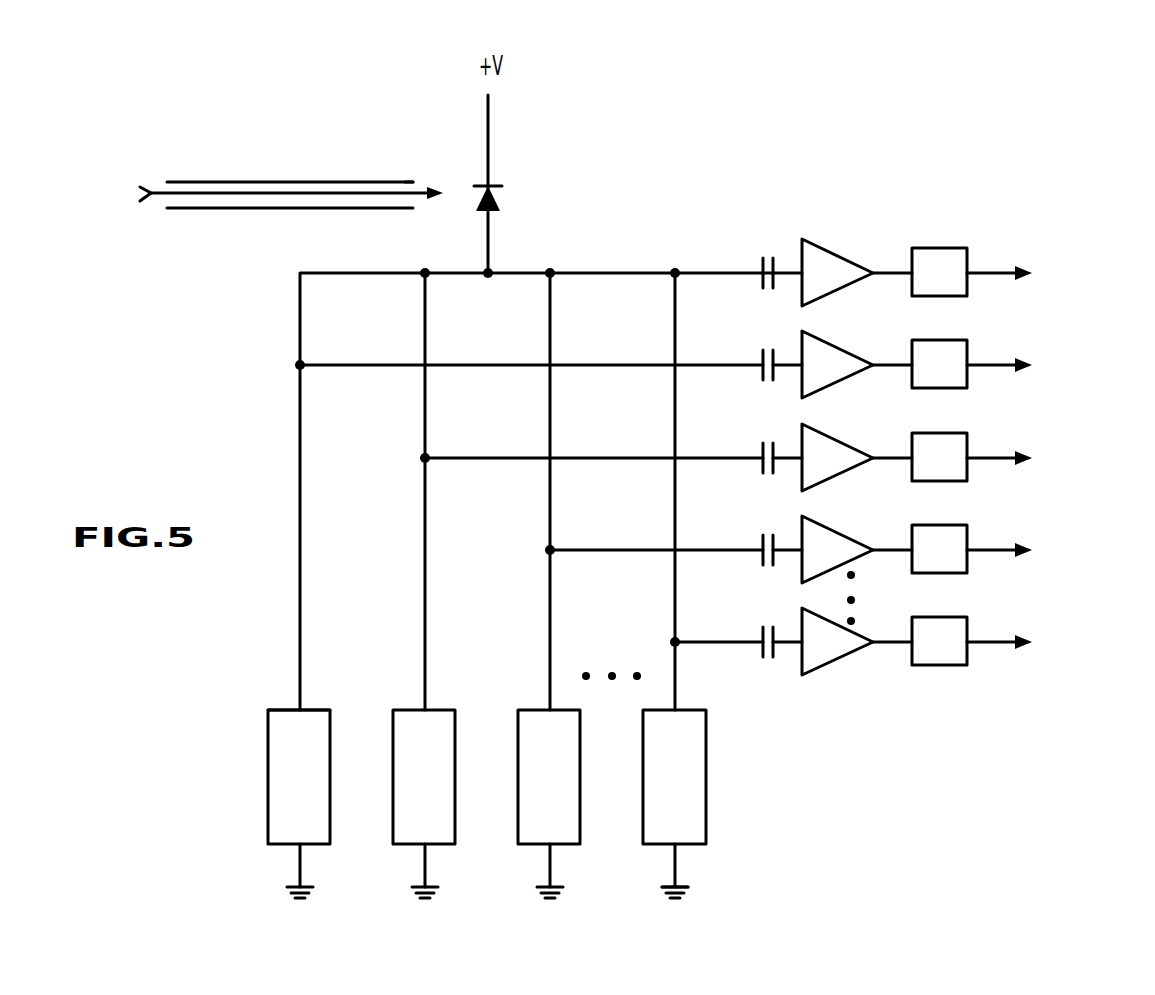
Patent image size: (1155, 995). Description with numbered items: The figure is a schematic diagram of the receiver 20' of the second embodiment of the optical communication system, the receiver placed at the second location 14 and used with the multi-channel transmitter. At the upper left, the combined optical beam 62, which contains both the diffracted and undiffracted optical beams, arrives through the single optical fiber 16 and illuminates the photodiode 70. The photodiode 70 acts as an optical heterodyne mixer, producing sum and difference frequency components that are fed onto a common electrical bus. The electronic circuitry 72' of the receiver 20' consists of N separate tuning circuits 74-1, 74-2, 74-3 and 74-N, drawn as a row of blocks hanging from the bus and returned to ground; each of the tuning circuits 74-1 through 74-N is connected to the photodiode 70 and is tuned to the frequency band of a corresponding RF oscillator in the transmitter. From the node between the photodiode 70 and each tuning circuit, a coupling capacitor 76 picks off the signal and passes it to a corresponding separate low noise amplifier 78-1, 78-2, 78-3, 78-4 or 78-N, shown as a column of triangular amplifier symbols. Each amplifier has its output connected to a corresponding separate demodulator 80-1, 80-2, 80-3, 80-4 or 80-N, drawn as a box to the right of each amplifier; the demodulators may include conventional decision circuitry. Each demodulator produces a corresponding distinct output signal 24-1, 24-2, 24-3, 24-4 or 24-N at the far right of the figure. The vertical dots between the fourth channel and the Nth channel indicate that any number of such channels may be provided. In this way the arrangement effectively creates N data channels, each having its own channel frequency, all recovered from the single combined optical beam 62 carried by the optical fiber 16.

The optical fiber 16 is at (290, 181).
The combined optical beam 62 is at (421, 185).
The photodiode 70 is at (501, 198).
The second location 14 is at (772, 182).
The coupling capacitor 76 is at (764, 260).
The low noise amplifier 78-1 is at (840, 255).
The low noise amplifier 78-2 is at (843, 348).
The low noise amplifier 78-3 is at (840, 440).
The low noise amplifier 78-4 is at (840, 537).
The low noise amplifier 78-N is at (837, 660).
The demodulator 80-1 is at (942, 246).
The demodulator 80-2 is at (942, 338).
The demodulator 80-3 is at (947, 430).
The demodulator 80-4 is at (942, 524).
The demodulator 80-N is at (940, 667).
The output signal 24-1 is at (1034, 255).
The output signal 24-2 is at (1036, 349).
The output signal 24-3 is at (1038, 435).
The output signal 24-4 is at (1036, 529).
The output signal 24-N is at (1033, 620).
The tuning circuit 74-1 is at (268, 708).
The tuning circuit 74-2 is at (393, 708).
The tuning circuit 74-3 is at (518, 708).
The tuning circuit 74-N is at (706, 842).
The electronic circuitry 72' is at (225, 670).
The receiver 20' is at (755, 866).